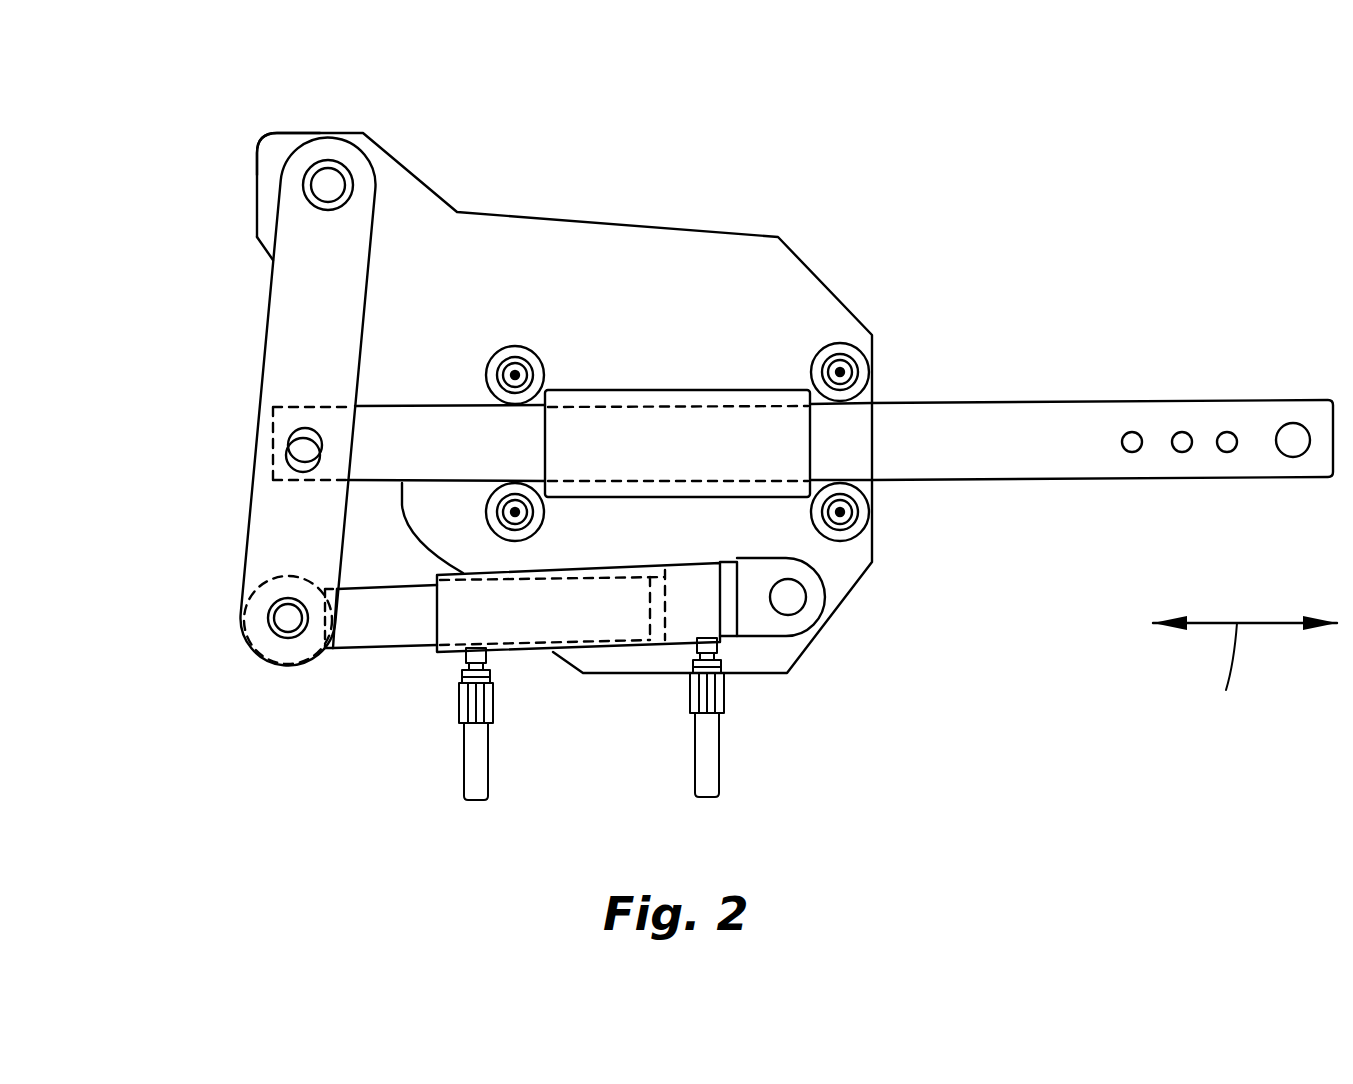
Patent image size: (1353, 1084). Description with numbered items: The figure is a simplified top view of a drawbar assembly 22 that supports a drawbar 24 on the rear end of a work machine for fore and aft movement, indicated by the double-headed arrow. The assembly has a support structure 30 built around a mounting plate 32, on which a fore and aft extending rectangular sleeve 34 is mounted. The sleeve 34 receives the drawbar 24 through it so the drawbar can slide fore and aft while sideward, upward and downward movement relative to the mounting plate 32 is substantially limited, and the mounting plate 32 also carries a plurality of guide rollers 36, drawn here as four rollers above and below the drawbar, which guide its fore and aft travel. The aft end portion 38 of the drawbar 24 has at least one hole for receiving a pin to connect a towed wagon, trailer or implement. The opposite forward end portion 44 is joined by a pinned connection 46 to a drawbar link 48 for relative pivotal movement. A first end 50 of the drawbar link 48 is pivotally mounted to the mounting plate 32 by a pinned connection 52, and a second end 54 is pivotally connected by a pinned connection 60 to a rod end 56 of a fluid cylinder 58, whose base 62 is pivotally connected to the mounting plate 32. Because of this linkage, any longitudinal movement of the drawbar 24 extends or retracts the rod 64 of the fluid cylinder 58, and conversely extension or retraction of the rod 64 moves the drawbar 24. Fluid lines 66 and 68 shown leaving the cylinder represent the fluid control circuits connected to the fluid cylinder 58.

The drawbar assembly 22 is at (832, 277).
The drawbar 24 is at (1097, 402).
The support structure 30 is at (643, 223).
The mounting plate 32 is at (564, 403).
The rectangular sleeve 34 is at (677, 390).
The guide rollers 36 is at (513, 347).
The aft end portion 38 is at (1278, 400).
The forward end portion 44 is at (393, 406).
The pinned connection 46 is at (290, 446).
The drawbar link 48 is at (252, 525).
The first end 50 is at (280, 187).
The pinned connection 52 is at (338, 162).
The second end 54 is at (242, 592).
The rod end 56 is at (347, 650).
The fluid cylinder 58 is at (533, 652).
The pinned connection 60 is at (272, 637).
The base 62 is at (773, 637).
The rod 64 is at (375, 588).
The fluid line 66 is at (462, 773).
The fluid line 68 is at (692, 737).